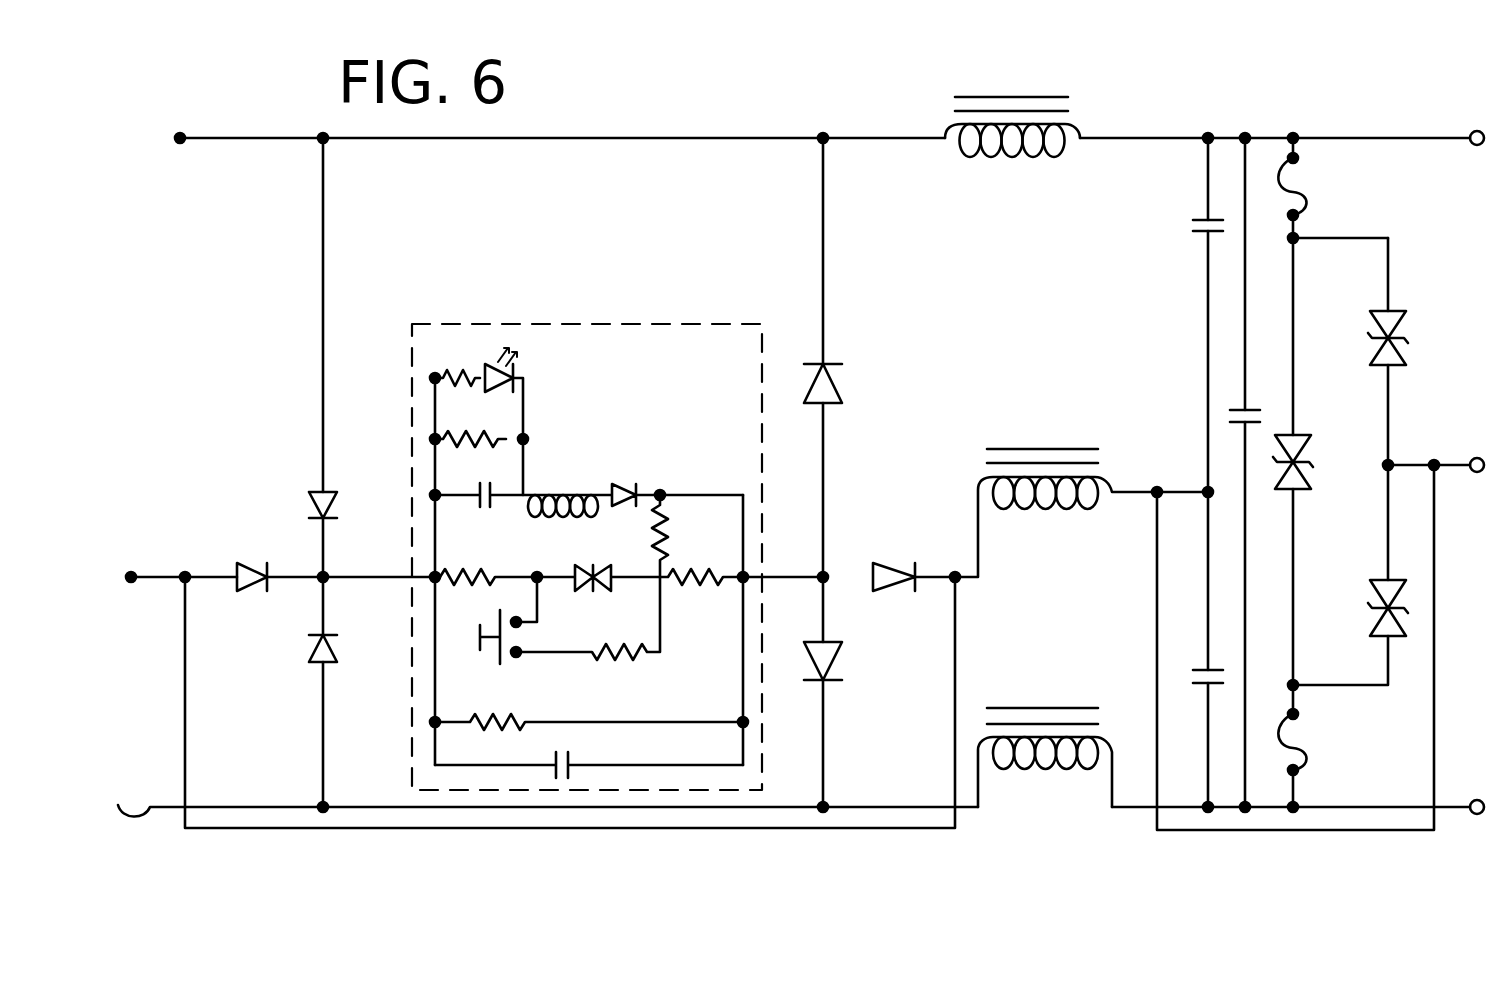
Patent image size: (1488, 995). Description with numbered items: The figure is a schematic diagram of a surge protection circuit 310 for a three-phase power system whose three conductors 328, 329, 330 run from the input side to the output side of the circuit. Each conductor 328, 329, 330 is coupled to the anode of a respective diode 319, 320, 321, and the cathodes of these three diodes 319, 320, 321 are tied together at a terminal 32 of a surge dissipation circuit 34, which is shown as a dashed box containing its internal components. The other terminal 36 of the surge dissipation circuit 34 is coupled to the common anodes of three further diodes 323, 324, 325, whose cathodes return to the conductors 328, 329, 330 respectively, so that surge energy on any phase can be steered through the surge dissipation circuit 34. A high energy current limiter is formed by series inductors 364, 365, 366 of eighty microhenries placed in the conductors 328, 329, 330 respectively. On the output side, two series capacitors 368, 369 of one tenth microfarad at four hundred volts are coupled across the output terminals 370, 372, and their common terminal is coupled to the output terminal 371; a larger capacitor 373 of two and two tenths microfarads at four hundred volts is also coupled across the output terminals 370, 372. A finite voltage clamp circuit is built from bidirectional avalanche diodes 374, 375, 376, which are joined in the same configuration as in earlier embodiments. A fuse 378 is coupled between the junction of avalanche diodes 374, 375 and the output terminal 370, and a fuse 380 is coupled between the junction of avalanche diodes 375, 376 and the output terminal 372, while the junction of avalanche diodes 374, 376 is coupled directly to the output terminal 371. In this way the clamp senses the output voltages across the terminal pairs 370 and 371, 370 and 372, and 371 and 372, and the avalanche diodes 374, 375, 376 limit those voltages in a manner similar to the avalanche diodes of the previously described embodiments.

The surge protection circuit 310 is at (670, 124).
The conductor 328 is at (258, 137).
The conductor 329 is at (186, 575).
The conductor 330 is at (152, 805).
The terminal 32 is at (326, 575).
The surge dissipation circuit 34 is at (525, 314).
The terminal 36 is at (830, 575).
The diode 319 is at (310, 505).
The diode 320 is at (250, 590).
The diode 321 is at (312, 652).
The diode 323 is at (846, 388).
The diode 324 is at (893, 592).
The diode 325 is at (843, 655).
The series inductor 364 is at (1030, 158).
The series inductor 365 is at (1050, 505).
The series inductor 366 is at (1068, 766).
The capacitor 368 is at (1192, 222).
The capacitor 369 is at (1192, 672).
The capacitor 373 is at (1228, 410).
The output terminal 370 is at (1472, 150).
The output terminal 371 is at (1470, 458).
The output terminal 372 is at (1472, 818).
The bidirectional avalanche diode 374 is at (1405, 325).
The bidirectional avalanche diode 375 is at (1305, 452).
The bidirectional avalanche diode 376 is at (1372, 596).
The fuse 378 is at (1303, 198).
The fuse 380 is at (1305, 752).